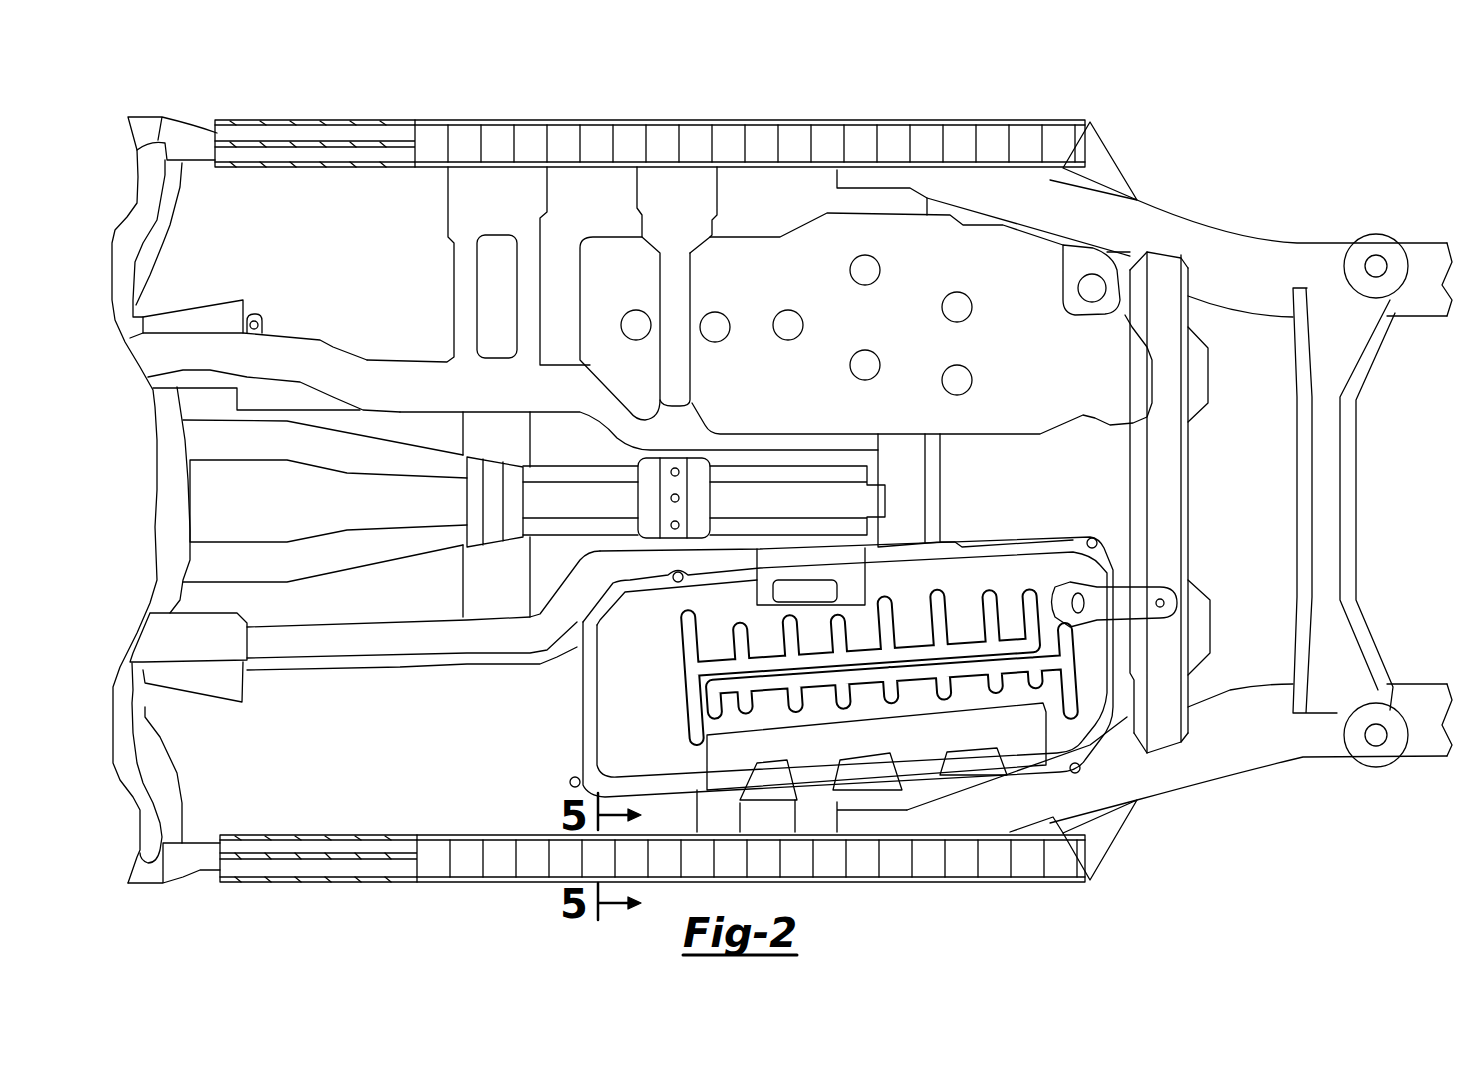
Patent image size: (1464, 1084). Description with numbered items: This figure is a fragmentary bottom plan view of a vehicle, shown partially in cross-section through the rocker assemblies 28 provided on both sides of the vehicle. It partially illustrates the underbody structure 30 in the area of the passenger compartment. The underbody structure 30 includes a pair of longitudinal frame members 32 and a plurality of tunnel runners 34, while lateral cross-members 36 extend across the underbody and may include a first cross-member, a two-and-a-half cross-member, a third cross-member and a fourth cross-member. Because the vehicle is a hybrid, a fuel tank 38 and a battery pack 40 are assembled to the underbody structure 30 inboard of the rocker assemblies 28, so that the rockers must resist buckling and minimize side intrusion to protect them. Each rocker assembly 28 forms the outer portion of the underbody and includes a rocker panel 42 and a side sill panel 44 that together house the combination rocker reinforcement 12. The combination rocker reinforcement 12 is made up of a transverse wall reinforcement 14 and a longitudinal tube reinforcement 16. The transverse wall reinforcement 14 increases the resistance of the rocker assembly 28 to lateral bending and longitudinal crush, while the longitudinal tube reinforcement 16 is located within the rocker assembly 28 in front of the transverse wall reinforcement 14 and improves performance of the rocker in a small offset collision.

The combination rocker reinforcement 12 is at (591, 108).
The transverse wall reinforcement 14 is at (715, 142).
The longitudinal tube reinforcement 16 is at (282, 135).
The rocker assembly 28 is at (519, 108).
The underbody structure 30 is at (1242, 172).
The longitudinal frame members 32 is at (1230, 748).
The tunnel runners 34 is at (327, 557).
The lateral cross-members 36 is at (462, 203).
The fuel tank 38 is at (1043, 366).
The battery pack 40 is at (658, 703).
The rocker panel 42 is at (905, 120).
The side sill panel 44 is at (798, 170).